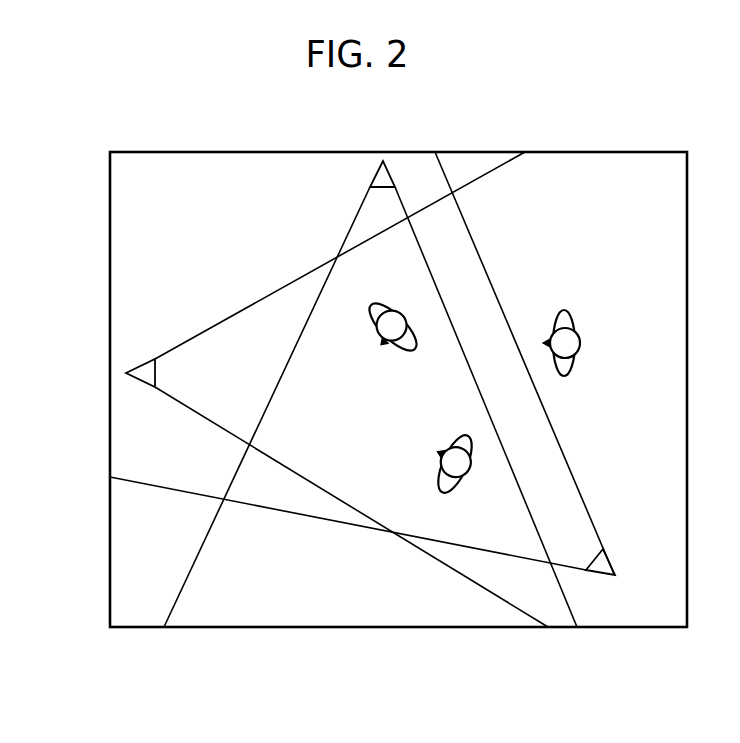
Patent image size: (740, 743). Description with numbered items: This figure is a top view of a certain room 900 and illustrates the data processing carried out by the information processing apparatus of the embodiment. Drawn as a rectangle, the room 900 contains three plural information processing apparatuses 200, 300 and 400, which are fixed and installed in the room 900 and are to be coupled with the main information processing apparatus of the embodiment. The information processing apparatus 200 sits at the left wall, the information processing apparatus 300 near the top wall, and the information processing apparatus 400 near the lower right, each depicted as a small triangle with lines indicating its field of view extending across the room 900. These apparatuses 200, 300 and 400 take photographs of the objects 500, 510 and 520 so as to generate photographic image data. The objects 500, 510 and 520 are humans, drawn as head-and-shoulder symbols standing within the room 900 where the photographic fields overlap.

The information processing apparatus 200 is at (140, 363).
The information processing apparatus 300 is at (373, 177).
The information processing apparatus 400 is at (615, 568).
The object 500 is at (400, 352).
The object 510 is at (440, 483).
The object 520 is at (575, 317).
The room 900 is at (630, 627).